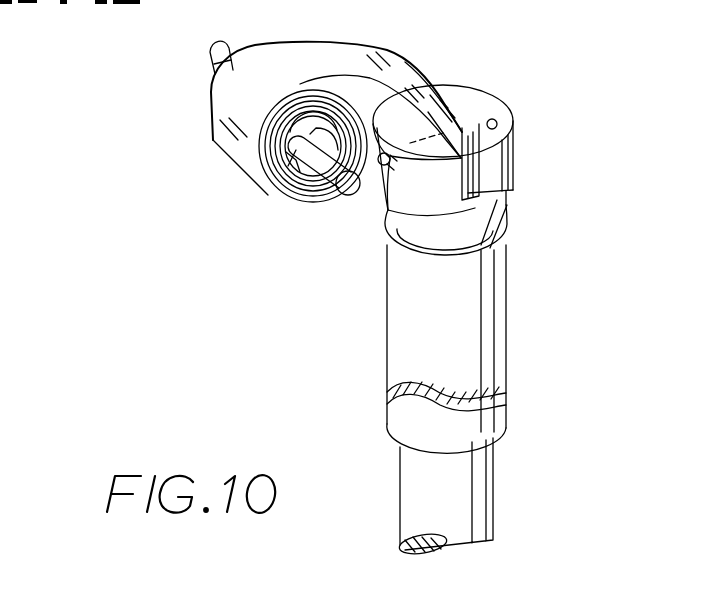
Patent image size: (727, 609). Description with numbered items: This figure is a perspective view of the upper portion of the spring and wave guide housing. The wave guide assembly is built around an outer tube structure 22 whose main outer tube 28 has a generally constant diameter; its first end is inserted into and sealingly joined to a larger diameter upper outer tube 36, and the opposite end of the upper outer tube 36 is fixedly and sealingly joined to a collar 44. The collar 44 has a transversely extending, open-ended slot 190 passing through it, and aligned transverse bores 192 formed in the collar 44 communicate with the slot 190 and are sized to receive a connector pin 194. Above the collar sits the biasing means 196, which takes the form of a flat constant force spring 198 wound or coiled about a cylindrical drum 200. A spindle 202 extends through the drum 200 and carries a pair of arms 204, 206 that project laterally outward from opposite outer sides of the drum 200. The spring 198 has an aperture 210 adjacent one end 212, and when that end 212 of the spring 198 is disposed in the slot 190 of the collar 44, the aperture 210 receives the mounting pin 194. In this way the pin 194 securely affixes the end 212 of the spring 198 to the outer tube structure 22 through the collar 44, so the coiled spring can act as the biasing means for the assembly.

The outer tube structure 22 is at (388, 451).
The main outer tube 28 is at (482, 477).
The upper outer tube 36 is at (483, 333).
The collar 44 is at (516, 172).
The slot 190 is at (482, 170).
The transverse bores 192 is at (465, 110).
The connector pin 194 is at (385, 166).
The biasing means 196 is at (203, 115).
The flat constant force spring 198 is at (240, 134).
The cylindrical drum 200 is at (290, 158).
The spindle 202 is at (208, 62).
The arm 204 is at (238, 48).
The arm 206 is at (330, 173).
The aperture 210 is at (437, 140).
The end of spring 212 is at (480, 196).